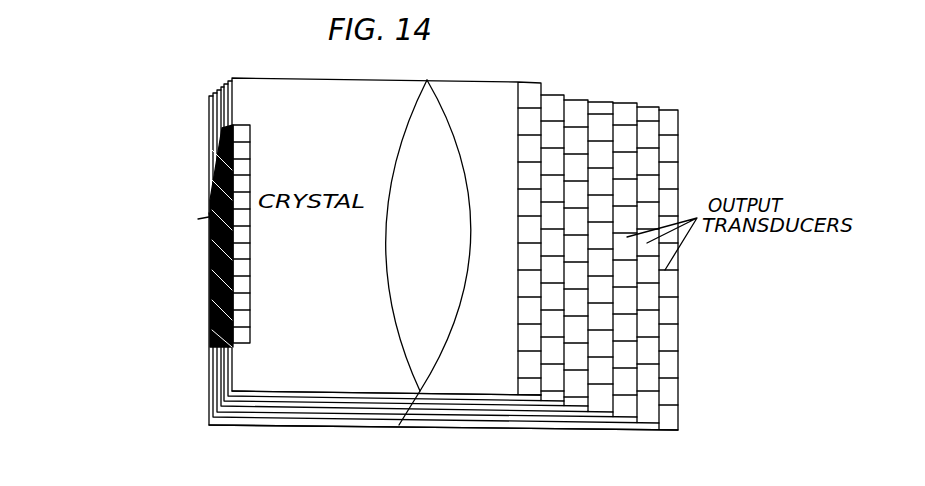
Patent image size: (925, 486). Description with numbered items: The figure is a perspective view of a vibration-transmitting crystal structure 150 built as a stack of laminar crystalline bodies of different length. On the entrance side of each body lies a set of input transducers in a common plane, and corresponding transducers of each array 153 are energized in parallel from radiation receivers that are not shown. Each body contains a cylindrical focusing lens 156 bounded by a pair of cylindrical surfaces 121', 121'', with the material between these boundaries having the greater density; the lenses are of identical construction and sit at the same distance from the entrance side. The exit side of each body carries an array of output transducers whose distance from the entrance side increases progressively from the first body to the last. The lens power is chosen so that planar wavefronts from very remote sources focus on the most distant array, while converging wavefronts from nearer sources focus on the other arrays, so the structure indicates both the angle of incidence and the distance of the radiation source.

The crystal 150 is at (283, 77).
The array of input transducers 153 is at (173, 233).
The focusing lens 156 is at (430, 236).
The cylindrical surface 121' is at (388, 235).
The cylindrical surface 121'' is at (454, 252).